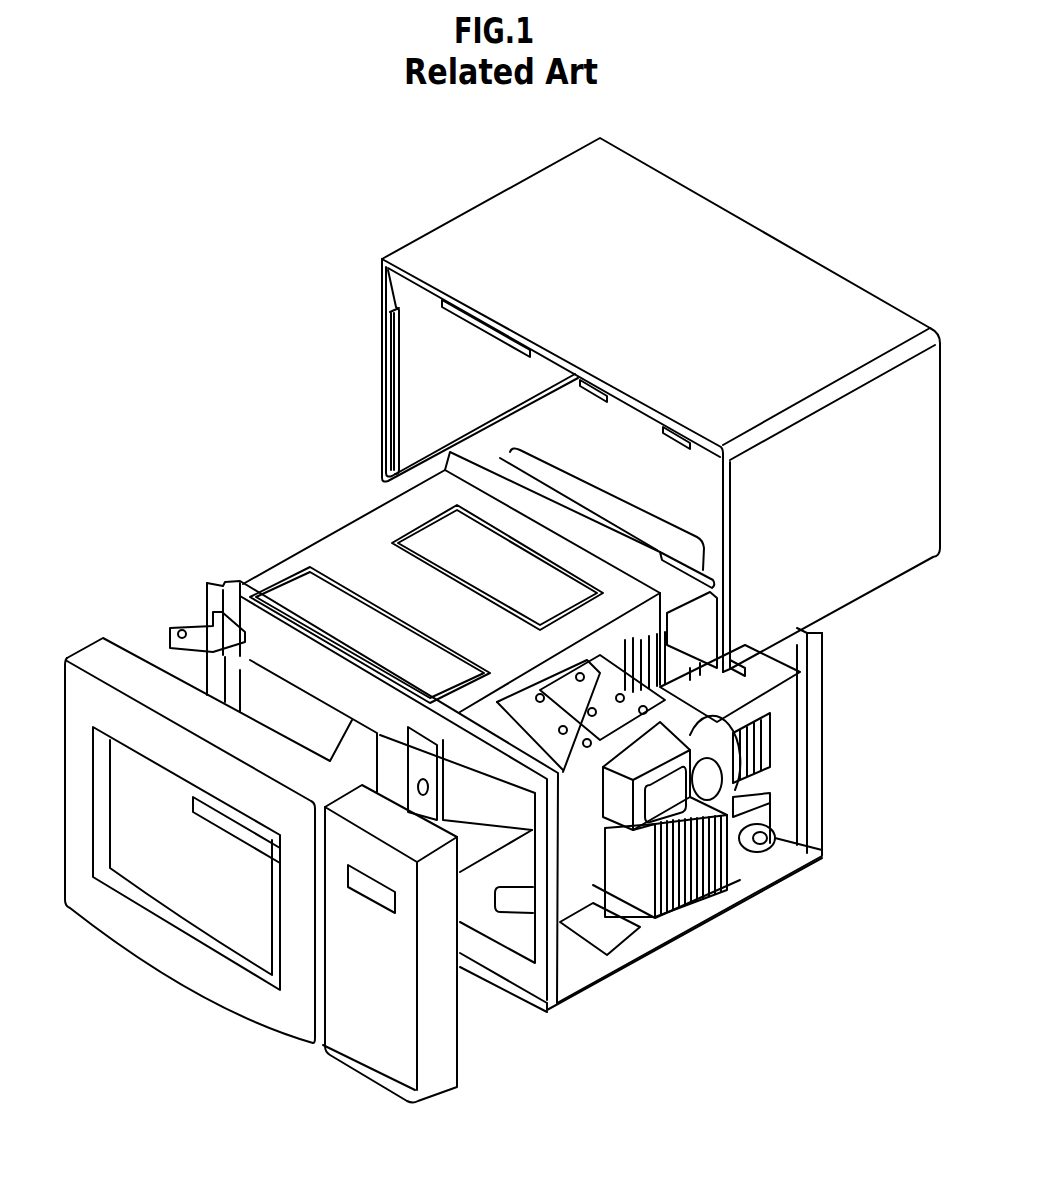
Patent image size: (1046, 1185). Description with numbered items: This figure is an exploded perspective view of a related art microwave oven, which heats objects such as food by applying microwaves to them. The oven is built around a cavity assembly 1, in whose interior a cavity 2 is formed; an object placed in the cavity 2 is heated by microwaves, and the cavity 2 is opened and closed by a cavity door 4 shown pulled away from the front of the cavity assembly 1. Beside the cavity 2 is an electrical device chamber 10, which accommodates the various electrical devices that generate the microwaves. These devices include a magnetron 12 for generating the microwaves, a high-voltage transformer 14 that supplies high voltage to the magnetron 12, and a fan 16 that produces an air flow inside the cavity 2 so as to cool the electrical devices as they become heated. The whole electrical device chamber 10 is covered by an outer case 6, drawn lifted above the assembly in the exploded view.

The cavity assembly 1 is at (310, 545).
The cavity 2 is at (298, 722).
The cavity door 4 is at (135, 945).
The outer case 6 is at (722, 252).
The electrical device chamber 10 is at (832, 805).
The magnetron 12 is at (667, 805).
The high-voltage transformer 14 is at (660, 903).
The fan 16 is at (707, 775).